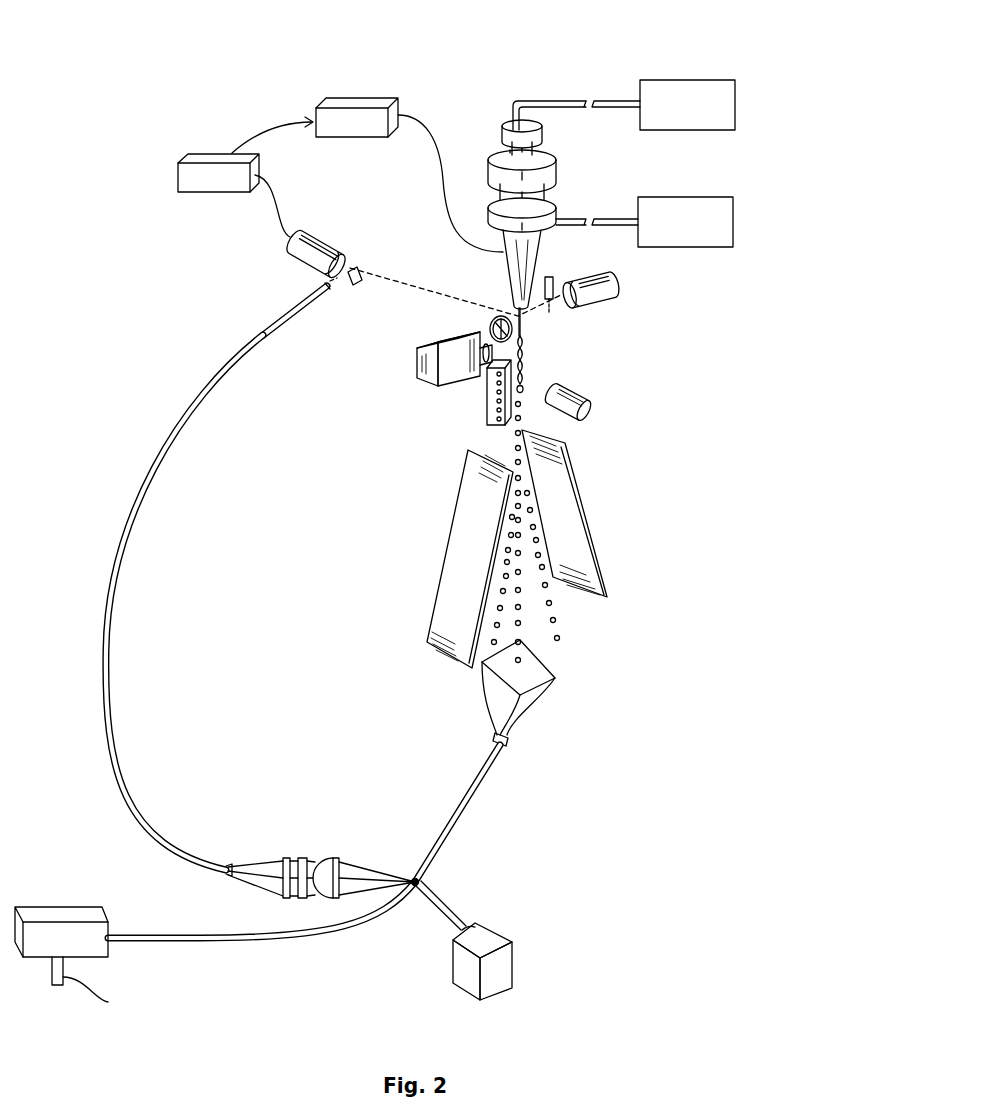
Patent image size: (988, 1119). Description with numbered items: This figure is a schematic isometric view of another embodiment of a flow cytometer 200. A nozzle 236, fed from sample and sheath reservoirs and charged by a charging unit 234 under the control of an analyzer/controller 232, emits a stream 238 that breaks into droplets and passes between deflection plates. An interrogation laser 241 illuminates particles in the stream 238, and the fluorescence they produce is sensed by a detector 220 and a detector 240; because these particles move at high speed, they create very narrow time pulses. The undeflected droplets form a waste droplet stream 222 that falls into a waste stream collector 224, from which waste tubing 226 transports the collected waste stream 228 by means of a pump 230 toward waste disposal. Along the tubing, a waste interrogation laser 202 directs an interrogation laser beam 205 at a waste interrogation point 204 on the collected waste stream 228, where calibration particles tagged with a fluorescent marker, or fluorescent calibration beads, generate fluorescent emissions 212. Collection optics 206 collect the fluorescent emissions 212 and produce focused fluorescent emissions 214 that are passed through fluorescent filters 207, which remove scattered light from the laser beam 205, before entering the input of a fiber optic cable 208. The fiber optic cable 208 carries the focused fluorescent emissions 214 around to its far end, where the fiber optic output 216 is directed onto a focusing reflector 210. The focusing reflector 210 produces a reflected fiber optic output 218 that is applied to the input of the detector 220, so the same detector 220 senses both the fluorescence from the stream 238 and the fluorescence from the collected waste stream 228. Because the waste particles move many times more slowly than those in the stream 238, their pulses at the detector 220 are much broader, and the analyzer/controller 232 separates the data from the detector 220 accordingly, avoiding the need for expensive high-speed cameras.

The flow cytometer 200 is at (240, 78).
The waste interrogation laser 202 is at (515, 952).
The waste interrogation point 204 is at (422, 884).
The interrogation laser beam 205 is at (437, 912).
The collection optics 206 is at (316, 848).
The fluorescent filters 207 is at (307, 903).
The fiber optic cable 208 is at (110, 762).
The focusing reflector 210 is at (341, 290).
The fluorescent emissions 212 is at (420, 878).
The focused fluorescent emissions 214 is at (264, 860).
The fiber optic output 216 is at (320, 288).
The reflected fiber optic output 218 is at (330, 281).
The detector 220 is at (323, 239).
The waste droplet stream 222 is at (527, 622).
The waste stream collector 224 is at (548, 698).
The waste tubing 226 is at (488, 777).
The collected waste stream 228 is at (472, 798).
The pump 230 is at (45, 910).
The analyzer/controller 232 is at (182, 157).
The charging unit 234 is at (371, 98).
The nozzle 236 is at (548, 205).
The stream 238 is at (526, 330).
The detector 240 is at (618, 288).
The interrogation laser 241 is at (420, 378).